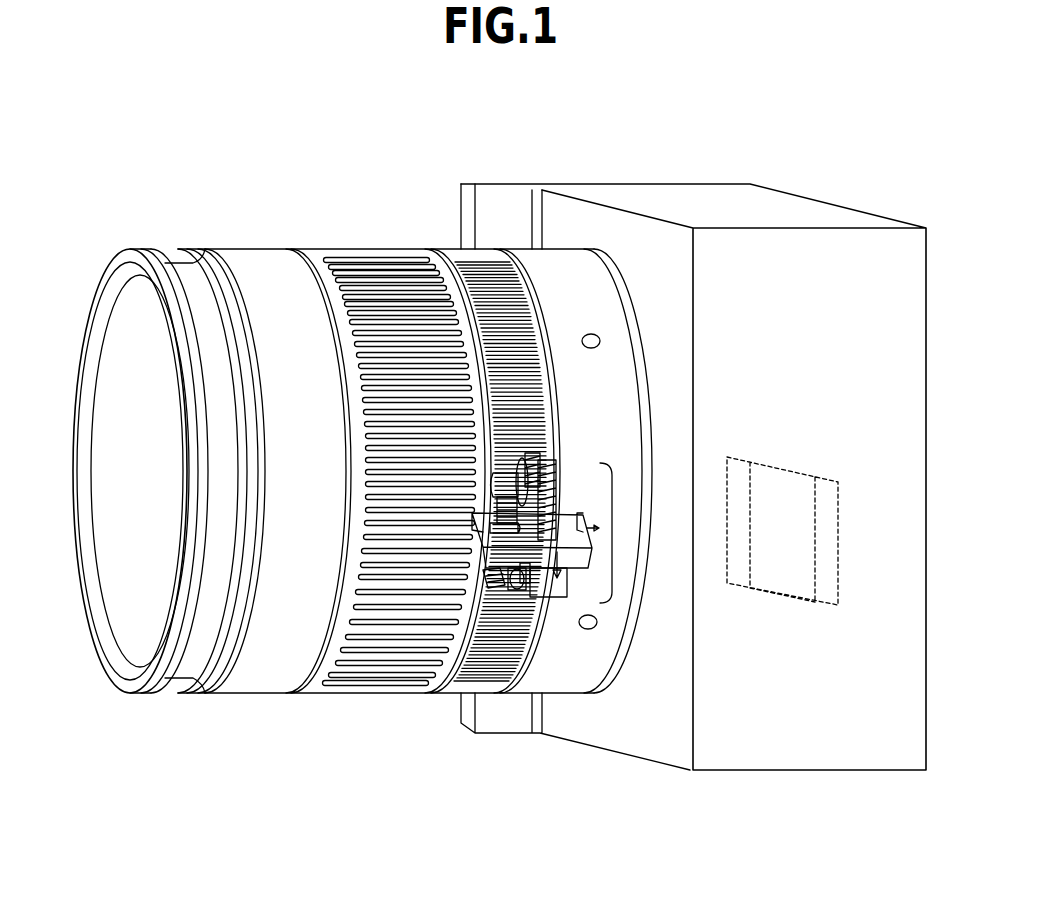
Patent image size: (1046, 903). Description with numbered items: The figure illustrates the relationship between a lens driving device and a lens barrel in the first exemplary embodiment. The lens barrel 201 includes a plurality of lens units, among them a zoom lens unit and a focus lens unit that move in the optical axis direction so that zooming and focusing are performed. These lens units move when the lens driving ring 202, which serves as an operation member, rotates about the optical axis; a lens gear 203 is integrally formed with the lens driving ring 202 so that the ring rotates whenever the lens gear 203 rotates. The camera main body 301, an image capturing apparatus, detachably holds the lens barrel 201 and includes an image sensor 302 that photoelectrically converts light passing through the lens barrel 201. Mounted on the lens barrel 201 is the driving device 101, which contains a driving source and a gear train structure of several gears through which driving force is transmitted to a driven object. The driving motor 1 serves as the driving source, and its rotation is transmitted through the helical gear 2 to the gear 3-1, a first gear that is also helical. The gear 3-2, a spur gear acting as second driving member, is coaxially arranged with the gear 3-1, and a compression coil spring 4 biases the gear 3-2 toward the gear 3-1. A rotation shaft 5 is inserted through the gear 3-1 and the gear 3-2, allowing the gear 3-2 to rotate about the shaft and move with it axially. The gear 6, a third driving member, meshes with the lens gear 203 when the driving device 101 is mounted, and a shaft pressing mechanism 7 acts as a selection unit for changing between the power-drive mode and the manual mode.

The driving motor 1 is at (558, 575).
The gear 2 is at (515, 583).
The gear 3-1 is at (553, 478).
The gear 3-2 is at (568, 497).
The compression coil spring 4 is at (578, 580).
The rotation shaft 5 is at (493, 573).
The gear 6 is at (540, 462).
The shaft pressing mechanism 7 is at (560, 577).
The driving device 101 is at (614, 540).
The lens barrel 201 is at (565, 207).
The lens driving ring 202 is at (356, 275).
The lens gear 203 is at (457, 265).
The camera main body 301 is at (803, 208).
The image sensor 302 is at (800, 472).